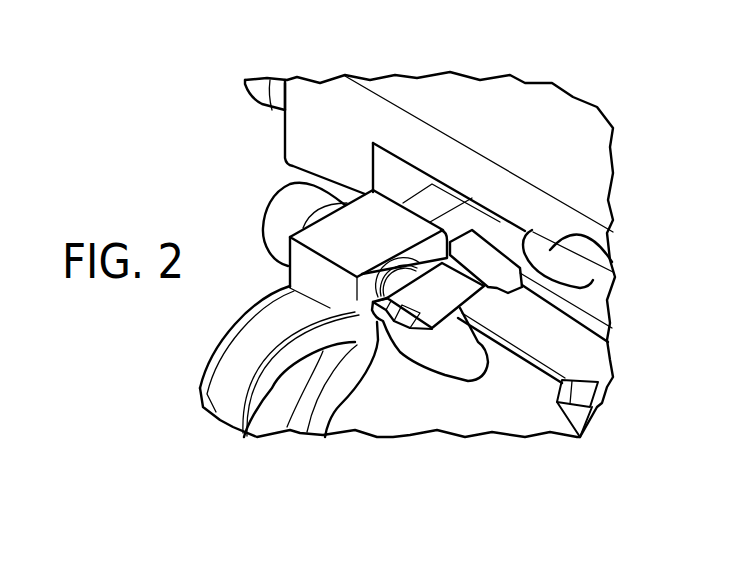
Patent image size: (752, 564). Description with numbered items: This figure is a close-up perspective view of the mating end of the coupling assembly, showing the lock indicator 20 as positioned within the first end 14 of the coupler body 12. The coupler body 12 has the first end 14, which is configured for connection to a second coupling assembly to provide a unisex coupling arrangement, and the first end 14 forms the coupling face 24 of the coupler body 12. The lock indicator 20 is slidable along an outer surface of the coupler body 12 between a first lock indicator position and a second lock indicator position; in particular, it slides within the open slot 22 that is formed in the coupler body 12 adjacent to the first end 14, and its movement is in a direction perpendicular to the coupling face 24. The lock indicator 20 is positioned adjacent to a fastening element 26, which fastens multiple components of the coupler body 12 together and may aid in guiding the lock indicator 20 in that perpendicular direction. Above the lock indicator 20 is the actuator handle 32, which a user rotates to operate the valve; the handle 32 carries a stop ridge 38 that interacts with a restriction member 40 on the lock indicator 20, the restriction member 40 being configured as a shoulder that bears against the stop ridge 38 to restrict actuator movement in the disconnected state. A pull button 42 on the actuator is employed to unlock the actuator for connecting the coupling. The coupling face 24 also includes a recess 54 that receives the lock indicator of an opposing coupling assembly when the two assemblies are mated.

The coupler body 12 is at (550, 420).
The first end 14 is at (213, 387).
The lock indicator 20 is at (464, 381).
The open slot 22 is at (343, 400).
The coupling face 24 is at (413, 400).
The fastening element 26 is at (285, 210).
The handle 32 is at (422, 100).
The stop ridge 38 is at (603, 243).
The restriction member 40 is at (596, 294).
The pull button 42 is at (258, 83).
The recess 54 is at (583, 417).